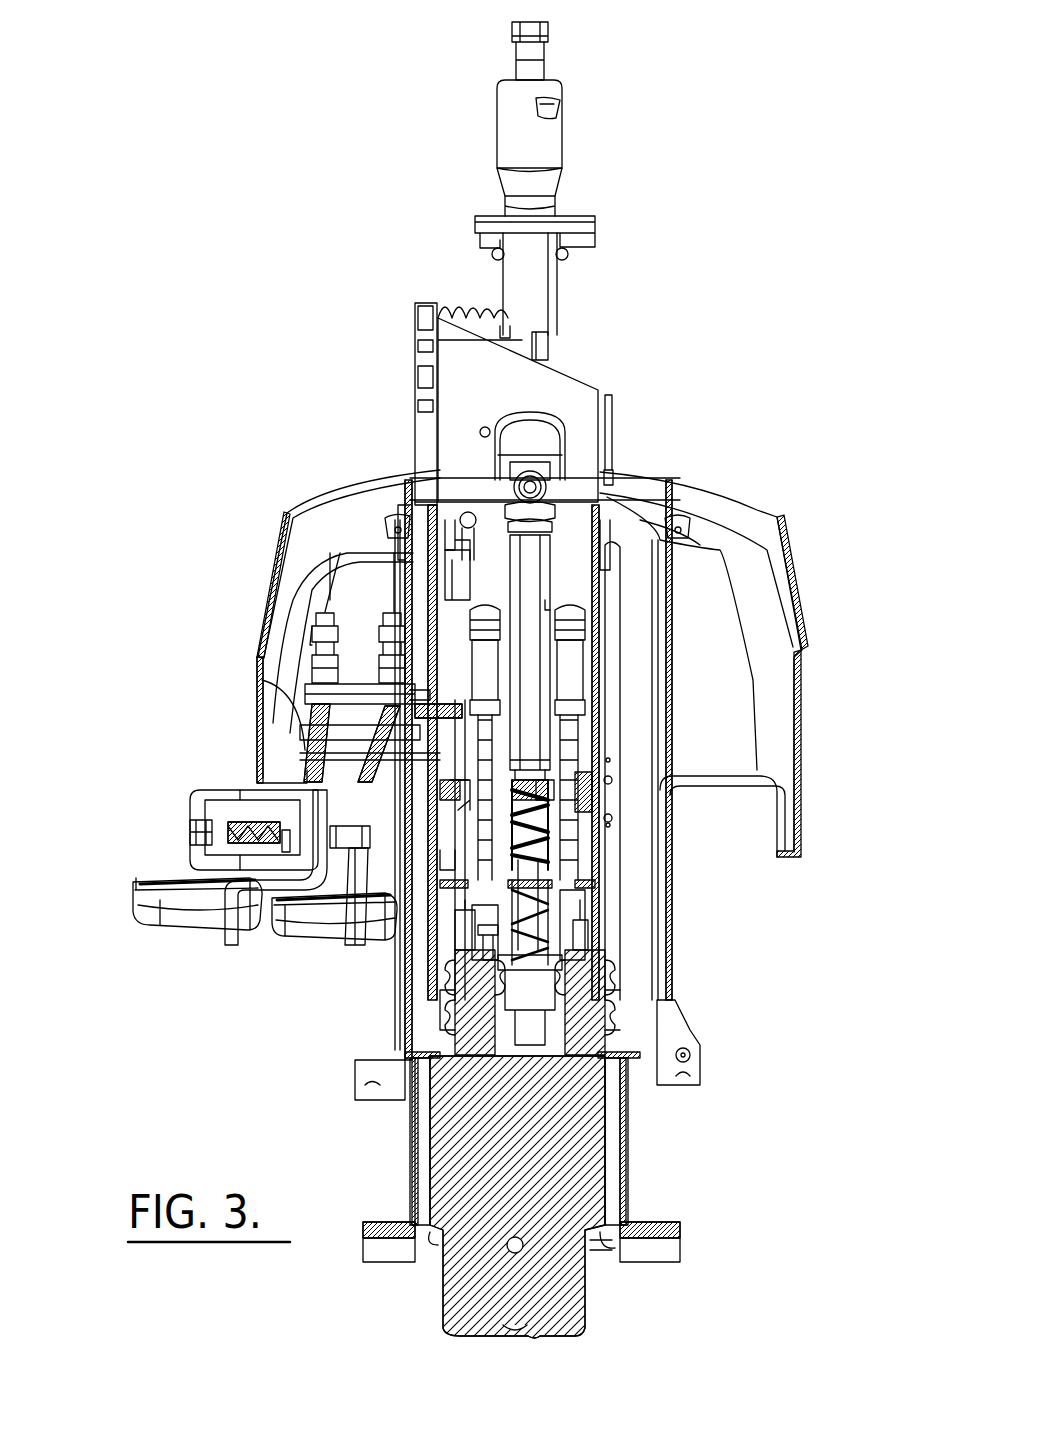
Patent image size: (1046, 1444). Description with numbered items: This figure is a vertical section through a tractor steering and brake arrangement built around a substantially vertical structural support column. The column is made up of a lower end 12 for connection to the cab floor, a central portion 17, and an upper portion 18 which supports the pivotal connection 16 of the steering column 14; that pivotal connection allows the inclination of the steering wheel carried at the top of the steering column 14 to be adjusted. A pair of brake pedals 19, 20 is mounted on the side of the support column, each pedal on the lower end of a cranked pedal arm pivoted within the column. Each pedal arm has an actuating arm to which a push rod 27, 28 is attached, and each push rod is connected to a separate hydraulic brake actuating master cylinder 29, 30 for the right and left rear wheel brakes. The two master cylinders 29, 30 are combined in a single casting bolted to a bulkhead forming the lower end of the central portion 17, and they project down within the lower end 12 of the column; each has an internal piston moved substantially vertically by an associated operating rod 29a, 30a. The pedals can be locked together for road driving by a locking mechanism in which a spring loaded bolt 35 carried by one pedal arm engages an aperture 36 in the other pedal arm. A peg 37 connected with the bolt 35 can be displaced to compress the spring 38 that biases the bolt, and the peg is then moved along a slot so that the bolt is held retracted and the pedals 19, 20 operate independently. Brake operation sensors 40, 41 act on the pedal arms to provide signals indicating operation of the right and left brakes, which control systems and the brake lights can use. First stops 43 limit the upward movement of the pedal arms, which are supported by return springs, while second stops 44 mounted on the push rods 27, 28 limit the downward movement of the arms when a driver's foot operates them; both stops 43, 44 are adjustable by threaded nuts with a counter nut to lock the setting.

The lower end 12 is at (625, 1158).
The steering column 14 is at (540, 590).
The pivotal connection 16 is at (555, 338).
The central portion 17 is at (597, 706).
The upper portion 18 is at (472, 418).
The brake pedal 19 is at (178, 880).
The brake pedal 20 is at (318, 935).
The push rod 27 is at (480, 740).
The push rod 28 is at (570, 738).
The hydraulic brake actuating master cylinder 29 is at (458, 1170).
The operating rod 29a is at (480, 935).
The hydraulic brake actuating master cylinder 30 is at (570, 1165).
The operating rod 30a is at (560, 936).
The spring loaded bolt 35 is at (300, 822).
The aperture 36 is at (352, 838).
The peg 37 is at (280, 835).
The spring 38 is at (215, 828).
The brake operation sensor 40 is at (322, 655).
The brake operation sensor 41 is at (398, 640).
The first stops 43 is at (416, 705).
The second stops 44 is at (580, 808).